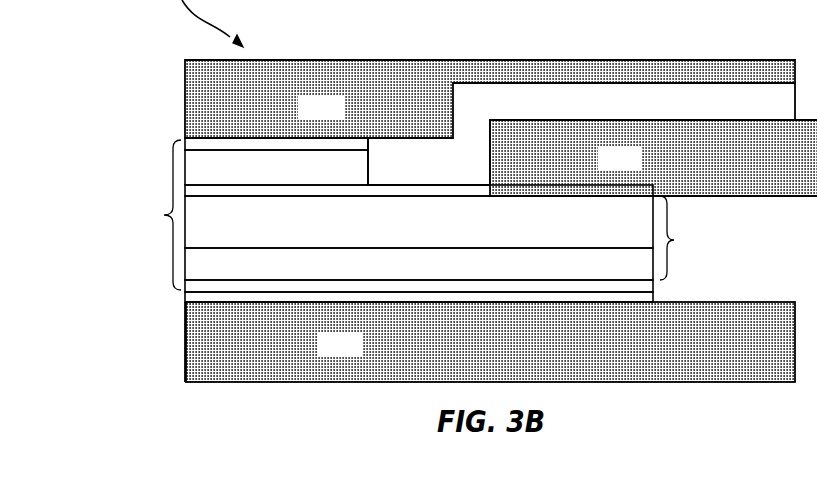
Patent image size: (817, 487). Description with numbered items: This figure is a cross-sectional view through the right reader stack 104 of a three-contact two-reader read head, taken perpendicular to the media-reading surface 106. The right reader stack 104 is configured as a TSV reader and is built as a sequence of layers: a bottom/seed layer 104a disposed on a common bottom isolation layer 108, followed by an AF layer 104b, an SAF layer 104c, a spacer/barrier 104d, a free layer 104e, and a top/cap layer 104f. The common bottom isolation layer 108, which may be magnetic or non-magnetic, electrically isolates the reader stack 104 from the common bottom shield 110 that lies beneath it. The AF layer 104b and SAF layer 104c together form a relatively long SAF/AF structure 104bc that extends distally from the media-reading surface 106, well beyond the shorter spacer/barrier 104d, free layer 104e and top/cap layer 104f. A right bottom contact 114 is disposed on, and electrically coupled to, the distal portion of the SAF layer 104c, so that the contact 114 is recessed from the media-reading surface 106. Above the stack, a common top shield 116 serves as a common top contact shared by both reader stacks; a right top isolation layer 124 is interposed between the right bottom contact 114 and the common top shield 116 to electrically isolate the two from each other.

The right reader stack 104 is at (148, 215).
The bottom/seed layer 104a is at (645, 287).
The AF layer 104b is at (419, 264).
The SAF layer 104c is at (419, 222).
The SAF/AF structure 104bc is at (703, 238).
The spacer/barrier 104d is at (215, 191).
The free layer 104e is at (276, 167).
The top/cap layer 104f is at (205, 146).
The media-reading surface 106 is at (157, 292).
The common bottom isolation layer 108 is at (645, 298).
The common bottom shield 110 is at (490, 342).
The right bottom contact 114 is at (653, 158).
The common top shield 116 is at (490, 99).
The right top isolation layer 124 is at (581, 134).